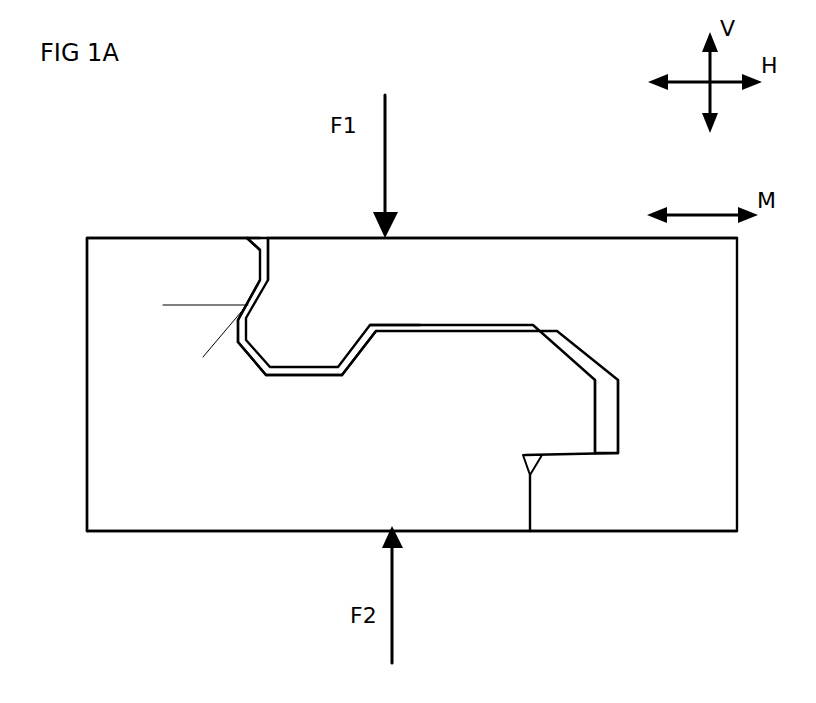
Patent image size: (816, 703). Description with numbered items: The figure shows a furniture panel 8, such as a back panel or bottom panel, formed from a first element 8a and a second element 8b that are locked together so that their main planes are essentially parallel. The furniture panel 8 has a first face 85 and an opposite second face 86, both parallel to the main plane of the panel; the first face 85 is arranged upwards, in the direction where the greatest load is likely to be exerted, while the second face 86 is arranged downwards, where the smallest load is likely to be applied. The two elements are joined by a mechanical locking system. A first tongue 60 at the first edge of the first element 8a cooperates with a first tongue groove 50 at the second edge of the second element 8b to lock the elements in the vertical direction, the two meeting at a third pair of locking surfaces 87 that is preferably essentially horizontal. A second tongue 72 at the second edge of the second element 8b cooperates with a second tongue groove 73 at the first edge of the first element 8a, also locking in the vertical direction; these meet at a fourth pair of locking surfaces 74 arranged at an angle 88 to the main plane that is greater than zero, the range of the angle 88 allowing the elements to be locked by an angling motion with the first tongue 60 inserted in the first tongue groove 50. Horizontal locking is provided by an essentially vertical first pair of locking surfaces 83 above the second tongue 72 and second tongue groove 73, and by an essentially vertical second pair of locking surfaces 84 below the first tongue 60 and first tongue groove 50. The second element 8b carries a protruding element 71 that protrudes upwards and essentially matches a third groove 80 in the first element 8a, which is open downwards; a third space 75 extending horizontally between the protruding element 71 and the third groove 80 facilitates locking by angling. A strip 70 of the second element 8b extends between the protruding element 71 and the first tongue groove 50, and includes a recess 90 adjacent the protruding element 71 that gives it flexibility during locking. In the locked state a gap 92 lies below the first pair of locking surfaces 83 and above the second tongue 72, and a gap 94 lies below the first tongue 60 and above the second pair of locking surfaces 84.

The furniture panel 8 is at (510, 135).
The first element 8a is at (171, 217).
The second element 8b is at (431, 219).
The first face 85 is at (135, 237).
The second face 86 is at (190, 532).
The strip 70 is at (483, 278).
The protruding element 71 is at (305, 332).
The first pair of locking surfaces 83 is at (247, 238).
The gap 92 is at (277, 238).
The fourth pair of locking surfaces 74 is at (252, 301).
The angle 88 is at (207, 307).
The second tongue 72 is at (239, 338).
The second tongue groove 73 is at (250, 358).
The third groove 80 is at (302, 378).
The third space 75 is at (364, 350).
The recess 90 is at (383, 325).
The gap 94 is at (525, 455).
The second pair of locking surfaces 84 is at (527, 518).
The first tongue 60 is at (568, 428).
The third pair of locking surfaces 87 is at (578, 460).
The first tongue groove 50 is at (611, 437).